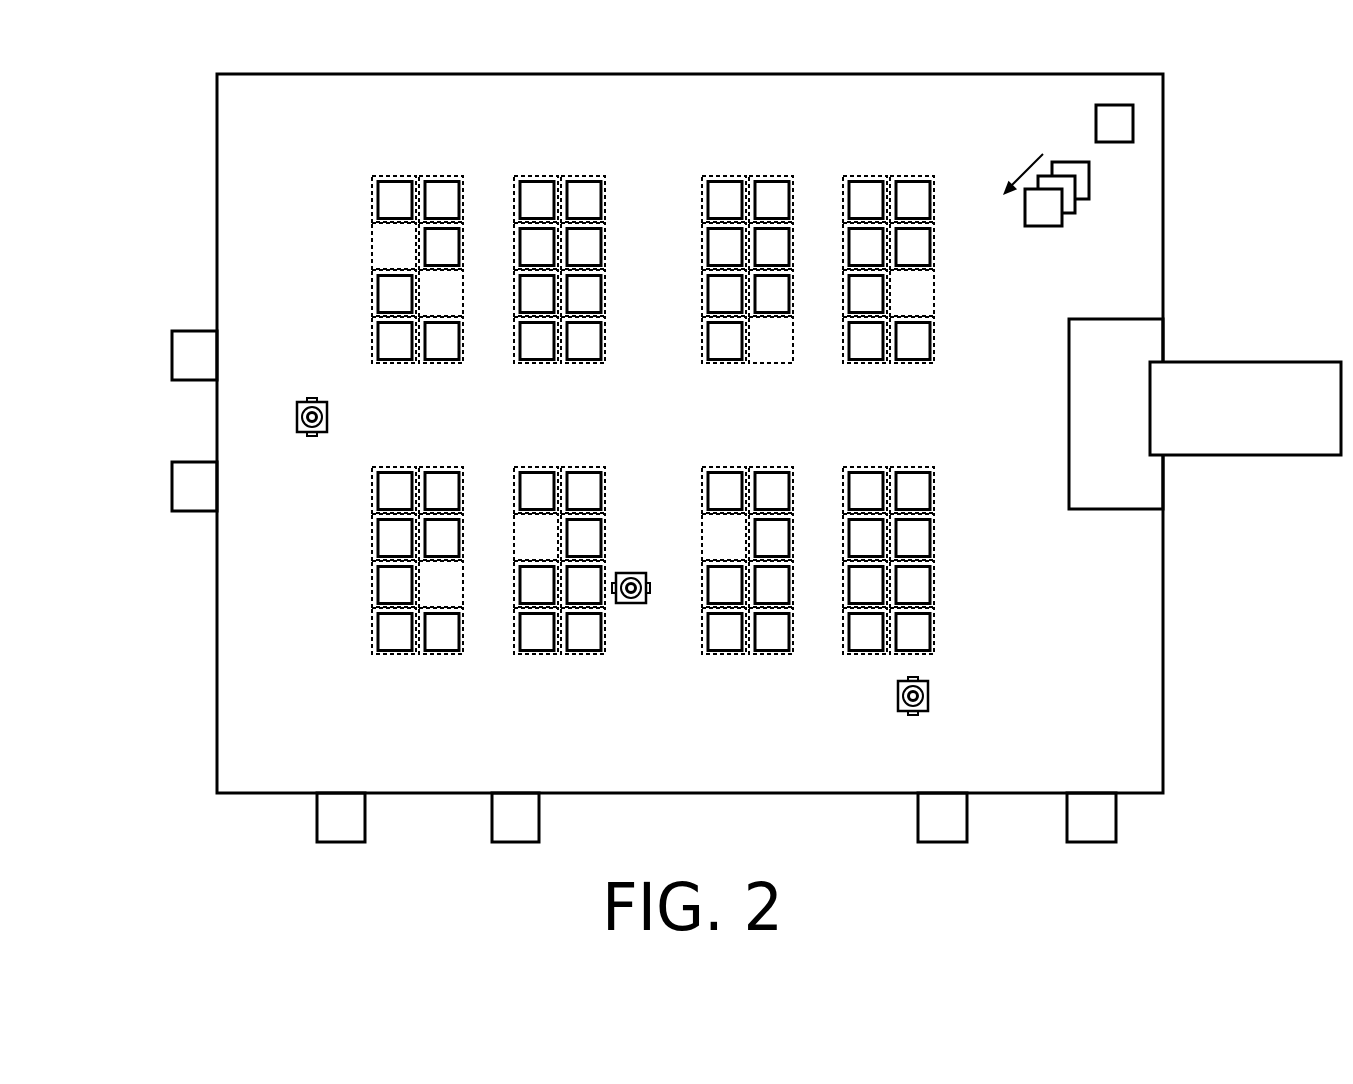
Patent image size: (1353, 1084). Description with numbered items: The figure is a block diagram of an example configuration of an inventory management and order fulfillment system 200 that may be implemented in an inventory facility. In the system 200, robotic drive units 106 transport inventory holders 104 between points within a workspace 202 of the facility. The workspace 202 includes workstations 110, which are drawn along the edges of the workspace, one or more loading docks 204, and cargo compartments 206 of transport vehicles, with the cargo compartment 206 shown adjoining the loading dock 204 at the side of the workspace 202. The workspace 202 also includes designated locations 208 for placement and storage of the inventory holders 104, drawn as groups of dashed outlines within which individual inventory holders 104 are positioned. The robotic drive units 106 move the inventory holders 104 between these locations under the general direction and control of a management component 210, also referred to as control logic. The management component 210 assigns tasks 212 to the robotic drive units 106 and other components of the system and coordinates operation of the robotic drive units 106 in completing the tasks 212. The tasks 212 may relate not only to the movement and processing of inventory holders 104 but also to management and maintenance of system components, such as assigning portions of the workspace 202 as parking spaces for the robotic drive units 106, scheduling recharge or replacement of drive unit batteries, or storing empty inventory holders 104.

The inventory management and/or order fulfillment system 200 is at (142, 275).
The workspace 202 is at (297, 156).
The loading dock 204 is at (1083, 431).
The cargo compartment 206 is at (1278, 375).
The designated location 208 is at (654, 386).
The management component 210 is at (1098, 125).
The task 212 is at (1045, 241).
The inventory holder 104 is at (863, 190).
The robotic drive unit 106 is at (314, 400).
The workstation 110 is at (177, 353).